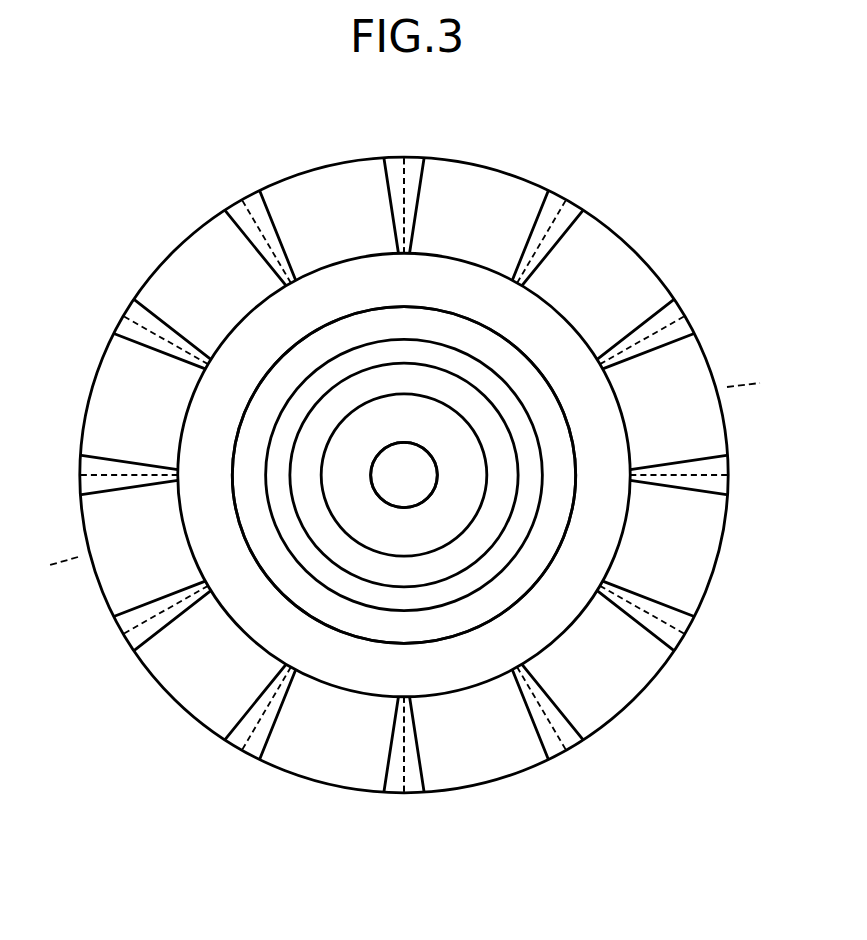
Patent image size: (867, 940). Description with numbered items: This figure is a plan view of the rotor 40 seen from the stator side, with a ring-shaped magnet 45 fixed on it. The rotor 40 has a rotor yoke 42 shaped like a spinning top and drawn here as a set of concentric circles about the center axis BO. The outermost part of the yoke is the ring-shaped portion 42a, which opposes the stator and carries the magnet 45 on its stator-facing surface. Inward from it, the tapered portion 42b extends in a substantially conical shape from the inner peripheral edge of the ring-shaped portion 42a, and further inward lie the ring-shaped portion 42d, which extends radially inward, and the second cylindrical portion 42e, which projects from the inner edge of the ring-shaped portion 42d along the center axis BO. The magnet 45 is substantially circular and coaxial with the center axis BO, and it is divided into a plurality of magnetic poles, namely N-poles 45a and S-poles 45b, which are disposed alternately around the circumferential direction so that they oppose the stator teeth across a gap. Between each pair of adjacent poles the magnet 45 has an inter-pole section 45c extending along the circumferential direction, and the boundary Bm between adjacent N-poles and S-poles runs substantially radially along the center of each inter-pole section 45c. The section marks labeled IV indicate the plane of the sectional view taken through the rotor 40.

The rotor 40 is at (167, 198).
The rotor yoke 42 is at (337, 300).
The ring-shaped portion 42a is at (542, 625).
The tapered portion 42b is at (437, 340).
The ring-shaped portion 42d is at (337, 457).
The second cylindrical portion 42e is at (433, 487).
The magnet 45 is at (715, 350).
The N-pole magnetic pole 45a is at (610, 240).
The S-pole magnetic pole 45b is at (525, 190).
The inter-pole section 45c is at (700, 477).
The boundary of adjacent magnetic poles Bm is at (402, 185).
The center axis BO is at (405, 474).
The section line IV- IV is at (761, 388).